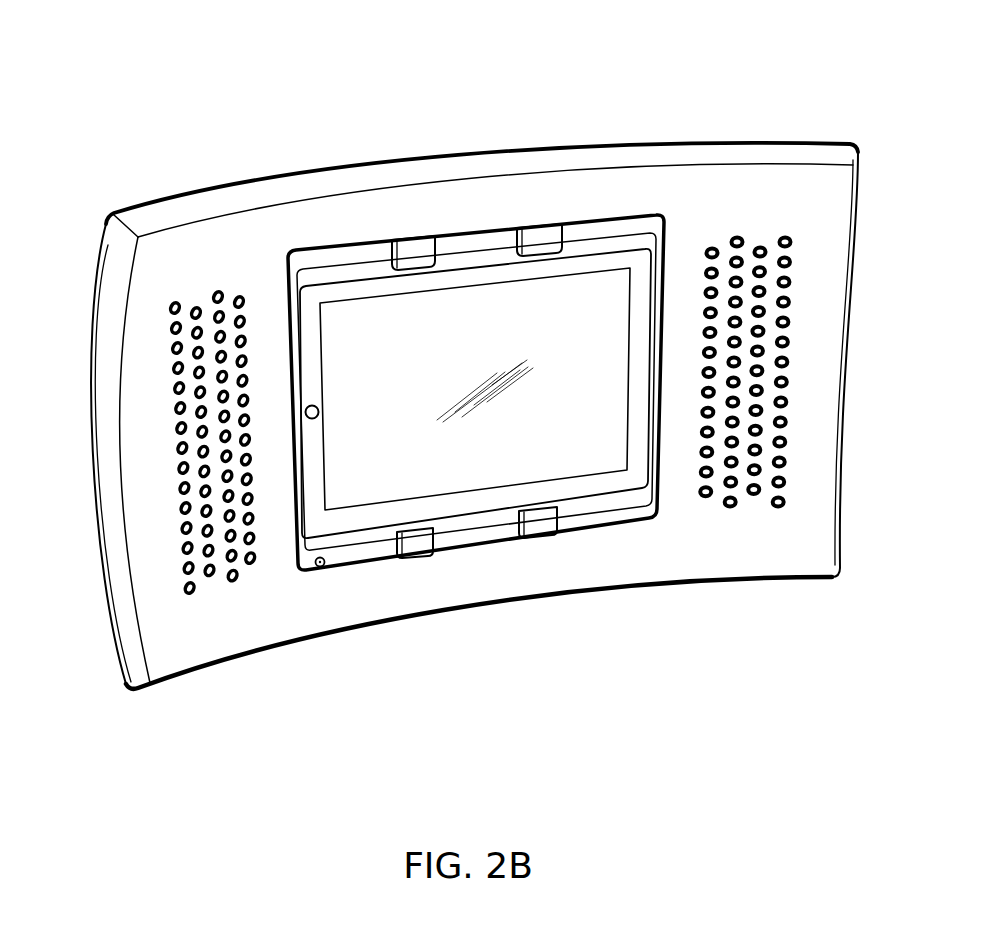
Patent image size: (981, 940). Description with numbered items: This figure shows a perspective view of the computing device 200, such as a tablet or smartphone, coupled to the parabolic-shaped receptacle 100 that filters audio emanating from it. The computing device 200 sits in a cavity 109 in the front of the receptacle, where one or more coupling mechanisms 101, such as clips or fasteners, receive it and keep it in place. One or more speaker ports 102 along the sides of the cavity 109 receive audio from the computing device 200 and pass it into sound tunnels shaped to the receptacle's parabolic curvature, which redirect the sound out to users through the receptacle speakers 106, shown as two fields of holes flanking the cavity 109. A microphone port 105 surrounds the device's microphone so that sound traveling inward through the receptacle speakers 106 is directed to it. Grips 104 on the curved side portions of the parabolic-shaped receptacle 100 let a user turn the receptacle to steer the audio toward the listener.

The parabolic-shaped receptacle 100 is at (730, 80).
The coupling mechanisms 101 is at (548, 237).
The speaker ports 102 is at (657, 290).
The grips 104 is at (107, 316).
The microphone port 105 is at (326, 561).
The receptacle speakers 106 is at (232, 582).
The cavity 109 is at (333, 262).
The computing device 200 is at (400, 383).